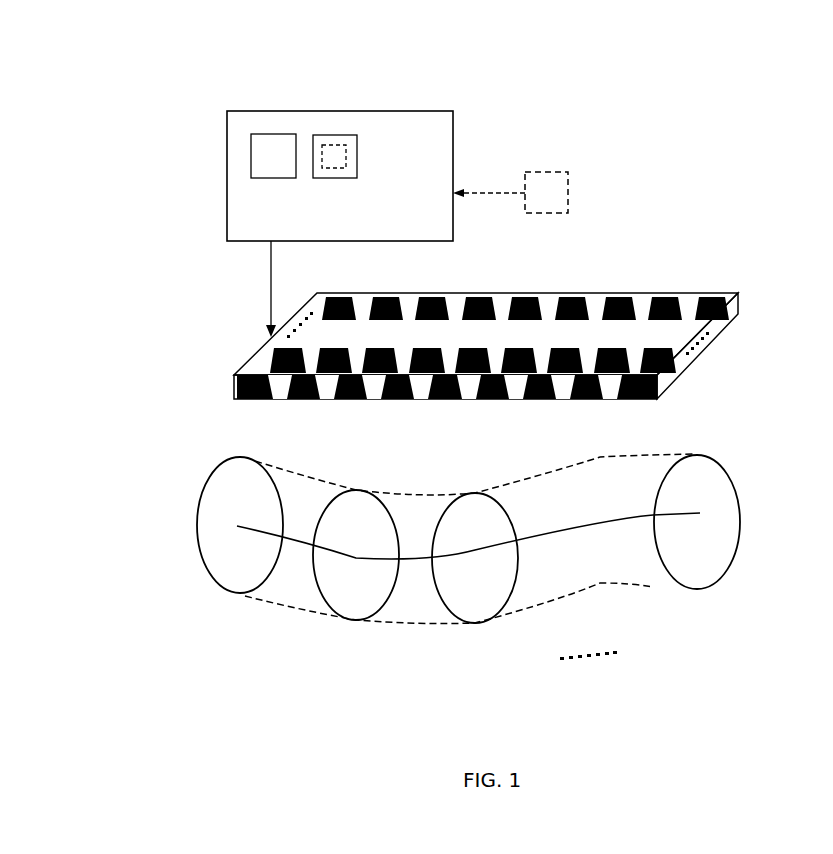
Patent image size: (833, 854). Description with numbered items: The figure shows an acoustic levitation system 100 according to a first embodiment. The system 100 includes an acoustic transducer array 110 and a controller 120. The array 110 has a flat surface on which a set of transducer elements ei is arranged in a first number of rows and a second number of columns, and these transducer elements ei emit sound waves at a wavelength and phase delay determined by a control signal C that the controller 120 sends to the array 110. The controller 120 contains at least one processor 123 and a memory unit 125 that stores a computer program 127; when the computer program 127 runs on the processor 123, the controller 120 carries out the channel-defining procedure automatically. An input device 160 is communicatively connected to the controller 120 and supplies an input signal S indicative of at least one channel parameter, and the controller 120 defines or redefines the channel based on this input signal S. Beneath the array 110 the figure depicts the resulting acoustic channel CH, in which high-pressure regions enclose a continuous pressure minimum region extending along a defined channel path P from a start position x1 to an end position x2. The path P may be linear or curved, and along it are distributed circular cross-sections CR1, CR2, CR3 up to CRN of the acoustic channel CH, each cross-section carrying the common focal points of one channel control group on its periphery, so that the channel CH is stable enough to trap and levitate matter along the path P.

The acoustic levitation system 100 is at (175, 166).
The acoustic transducer array 110 is at (628, 292).
The controller 120 is at (453, 142).
The processor 123 is at (271, 178).
The memory unit 125 is at (335, 178).
The computer program 127 is at (346, 157).
The input device 160 is at (568, 181).
The input signal S is at (489, 184).
The control signal C is at (277, 289).
The transducer element ei is at (673, 360).
The acoustic channel CH is at (661, 446).
The channel path P is at (247, 528).
The circular cross-section CR1 is at (235, 594).
The circular cross-section CR2 is at (356, 620).
The circular cross-section CR3 is at (477, 623).
The circular cross-section CRN is at (703, 588).
The start position x1 is at (222, 527).
The end position x2 is at (775, 488).